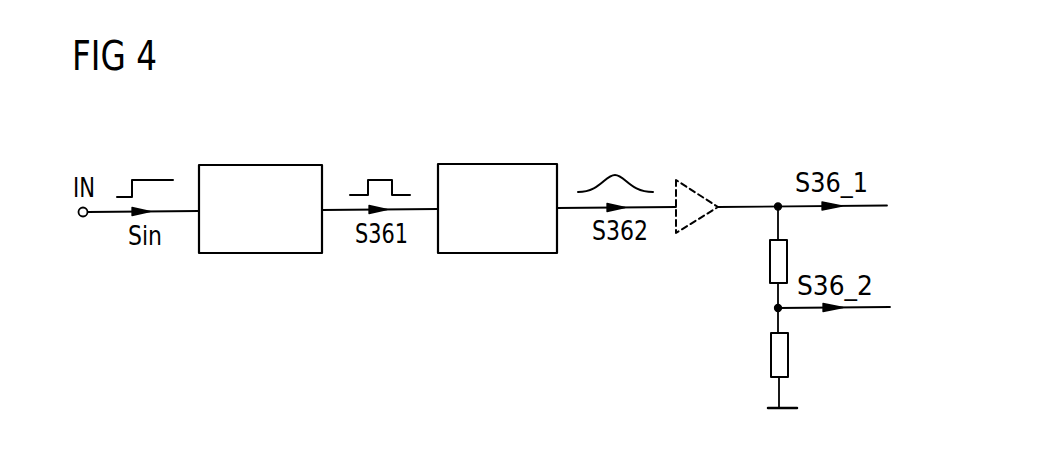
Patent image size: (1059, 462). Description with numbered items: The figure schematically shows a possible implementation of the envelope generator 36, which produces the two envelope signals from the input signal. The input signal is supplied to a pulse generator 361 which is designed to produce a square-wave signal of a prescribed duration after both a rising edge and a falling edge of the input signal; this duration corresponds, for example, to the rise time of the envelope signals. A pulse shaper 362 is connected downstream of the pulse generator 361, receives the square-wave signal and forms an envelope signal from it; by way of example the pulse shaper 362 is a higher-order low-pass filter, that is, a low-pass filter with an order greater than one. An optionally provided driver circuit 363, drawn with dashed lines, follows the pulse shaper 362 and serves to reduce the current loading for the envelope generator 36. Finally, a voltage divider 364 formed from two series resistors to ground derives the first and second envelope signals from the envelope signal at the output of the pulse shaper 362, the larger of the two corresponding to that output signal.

The envelope generator 36 is at (410, 132).
The pulse generator 361 is at (261, 165).
The pulse shaper 362 is at (498, 163).
The driver circuit 363 is at (692, 188).
The voltage divider 364 is at (741, 314).